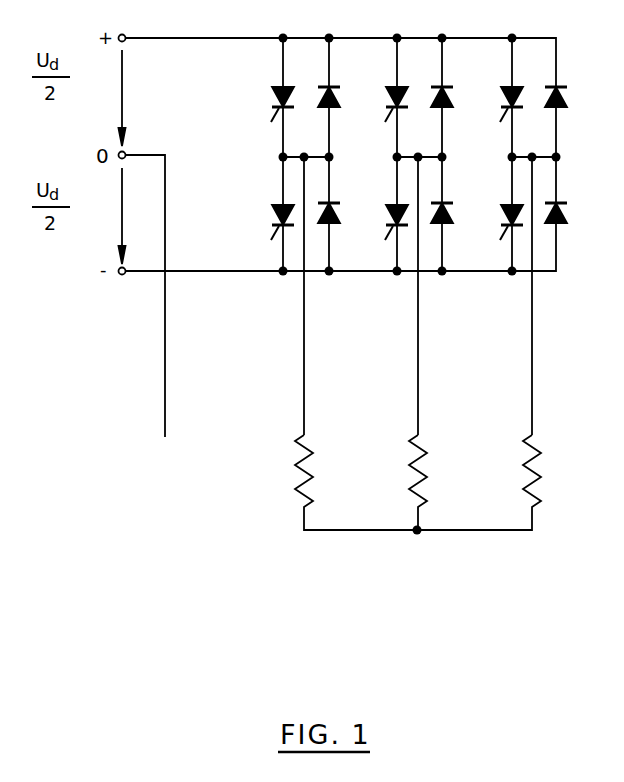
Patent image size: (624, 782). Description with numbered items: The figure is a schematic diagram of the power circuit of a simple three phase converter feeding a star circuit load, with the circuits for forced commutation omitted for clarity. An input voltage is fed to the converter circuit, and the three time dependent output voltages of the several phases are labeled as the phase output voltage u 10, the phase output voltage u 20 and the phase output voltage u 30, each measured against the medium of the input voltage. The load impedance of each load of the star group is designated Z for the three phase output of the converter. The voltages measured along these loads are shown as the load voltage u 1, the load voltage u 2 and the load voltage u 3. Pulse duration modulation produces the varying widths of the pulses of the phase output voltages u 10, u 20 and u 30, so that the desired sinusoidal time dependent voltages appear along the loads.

The first phase leg of inverter bridge (u10 output voltage) 10 is at (293, 320).
The second phase leg of inverter bridge (u20 output voltage) 20 is at (410, 367).
The third phase leg of inverter bridge (u30 output voltage) 30 is at (523, 413).
The first load impedance Z (voltage u1) 1 is at (270, 440).
The second load impedance Z (voltage u2) 2 is at (383, 448).
The third load impedance Z (voltage u3) 3 is at (498, 445).